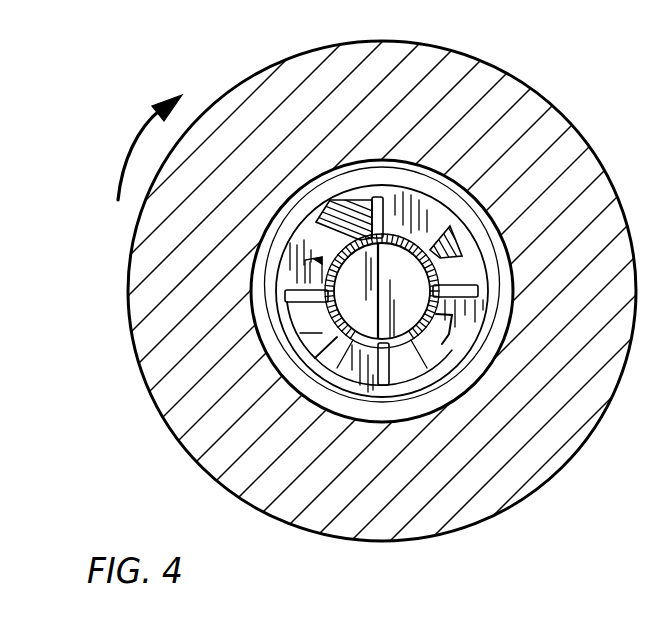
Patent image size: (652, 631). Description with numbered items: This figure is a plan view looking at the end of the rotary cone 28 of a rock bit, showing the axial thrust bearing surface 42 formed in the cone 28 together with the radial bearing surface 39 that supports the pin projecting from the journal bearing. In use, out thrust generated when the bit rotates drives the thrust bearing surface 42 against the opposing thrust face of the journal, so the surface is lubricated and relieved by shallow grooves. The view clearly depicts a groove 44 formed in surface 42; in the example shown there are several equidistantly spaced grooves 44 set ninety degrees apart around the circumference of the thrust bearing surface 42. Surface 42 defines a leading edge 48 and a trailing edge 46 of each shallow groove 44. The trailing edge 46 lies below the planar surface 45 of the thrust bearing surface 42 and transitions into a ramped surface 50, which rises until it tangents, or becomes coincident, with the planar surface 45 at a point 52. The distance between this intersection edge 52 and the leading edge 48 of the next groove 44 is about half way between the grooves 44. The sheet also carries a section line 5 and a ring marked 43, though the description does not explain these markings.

The cone 28 is at (555, 120).
The radial bearing surface 39 is at (427, 277).
The axial thrust bearing surface 42 is at (358, 345).
The eccentric ring 43 is at (300, 223).
The groove 44 is at (360, 197).
The planar surface 45 is at (342, 390).
The trailing edge 46 is at (287, 336).
The leading edge 48 is at (288, 268).
The ramped surface 50 is at (307, 337).
The point 52 is at (340, 350).
The section line 5- 5 is at (339, 268).